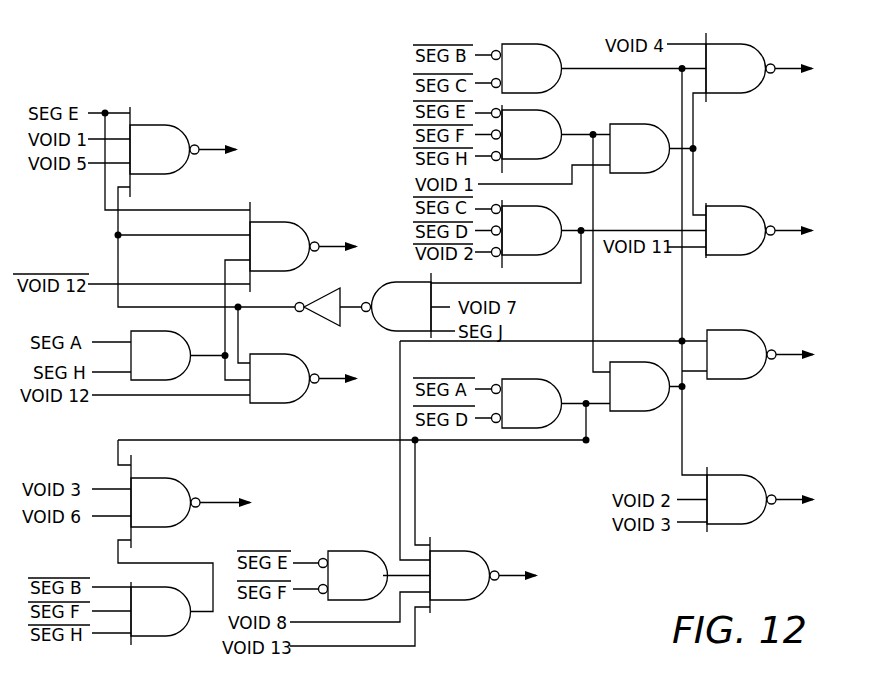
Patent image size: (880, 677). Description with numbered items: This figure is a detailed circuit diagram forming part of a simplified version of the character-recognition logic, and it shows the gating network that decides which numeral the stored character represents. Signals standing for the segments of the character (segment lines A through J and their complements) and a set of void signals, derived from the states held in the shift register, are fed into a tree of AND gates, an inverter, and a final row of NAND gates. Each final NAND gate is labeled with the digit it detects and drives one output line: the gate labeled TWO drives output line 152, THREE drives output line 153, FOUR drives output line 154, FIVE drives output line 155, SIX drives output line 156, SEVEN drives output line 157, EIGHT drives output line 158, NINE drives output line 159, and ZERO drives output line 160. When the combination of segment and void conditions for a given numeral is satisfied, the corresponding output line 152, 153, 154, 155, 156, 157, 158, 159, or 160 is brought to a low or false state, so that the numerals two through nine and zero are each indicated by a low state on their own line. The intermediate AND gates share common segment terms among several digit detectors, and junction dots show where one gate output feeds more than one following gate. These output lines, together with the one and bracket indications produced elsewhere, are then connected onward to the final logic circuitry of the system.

The output line 152 is at (790, 67).
The output line 153 is at (792, 229).
The output line 154 is at (338, 375).
The output line 155 is at (795, 497).
The output line 156 is at (233, 500).
The output line 157 is at (227, 147).
The output line 158 is at (793, 352).
The output line 159 is at (338, 243).
The output line 160 is at (534, 557).